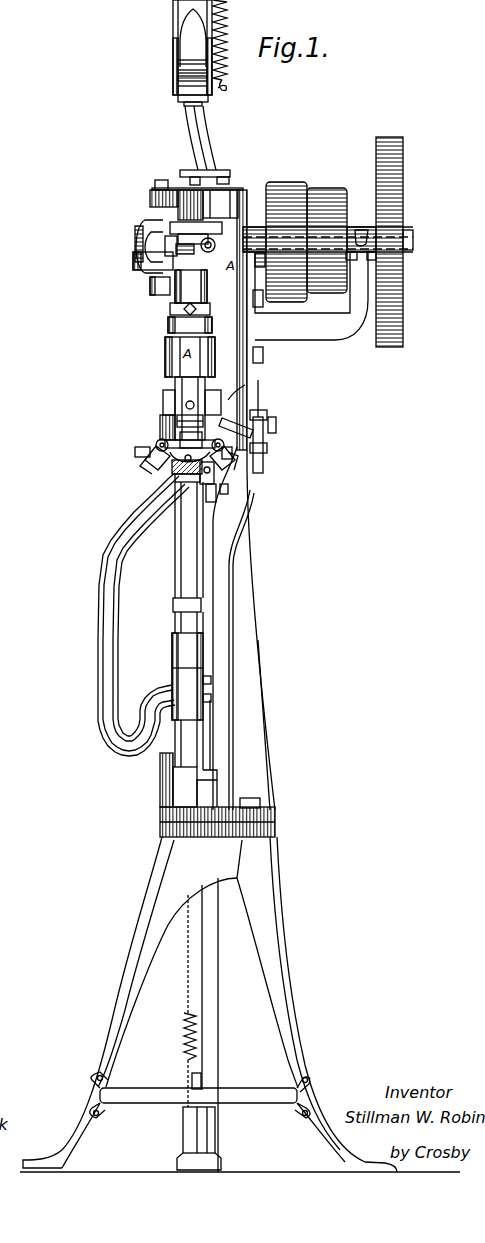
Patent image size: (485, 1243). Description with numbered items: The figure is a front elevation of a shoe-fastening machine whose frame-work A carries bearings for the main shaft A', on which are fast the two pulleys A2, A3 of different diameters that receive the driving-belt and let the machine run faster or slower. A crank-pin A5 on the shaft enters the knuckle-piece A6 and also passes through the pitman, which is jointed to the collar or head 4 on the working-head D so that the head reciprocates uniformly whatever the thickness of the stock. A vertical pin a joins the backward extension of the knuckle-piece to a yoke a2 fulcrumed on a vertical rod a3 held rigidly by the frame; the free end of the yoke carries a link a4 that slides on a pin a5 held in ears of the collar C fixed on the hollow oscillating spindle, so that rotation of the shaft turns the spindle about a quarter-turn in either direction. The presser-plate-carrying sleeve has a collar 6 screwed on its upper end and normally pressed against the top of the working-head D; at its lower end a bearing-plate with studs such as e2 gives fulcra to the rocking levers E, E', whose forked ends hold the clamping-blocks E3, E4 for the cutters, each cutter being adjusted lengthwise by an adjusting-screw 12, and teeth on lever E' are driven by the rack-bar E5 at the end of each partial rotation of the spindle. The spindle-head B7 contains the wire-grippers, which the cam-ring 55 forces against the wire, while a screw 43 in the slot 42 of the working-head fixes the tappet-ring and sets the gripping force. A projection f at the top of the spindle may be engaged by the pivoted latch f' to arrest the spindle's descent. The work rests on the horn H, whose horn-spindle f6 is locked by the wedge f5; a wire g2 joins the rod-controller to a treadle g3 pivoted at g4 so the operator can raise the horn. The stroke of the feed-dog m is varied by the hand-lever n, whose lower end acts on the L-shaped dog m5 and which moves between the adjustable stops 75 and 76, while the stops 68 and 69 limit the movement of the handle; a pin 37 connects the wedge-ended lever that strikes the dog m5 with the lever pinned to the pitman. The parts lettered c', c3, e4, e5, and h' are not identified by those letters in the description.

The cylinder c' is at (180, 53).
The spring c3 is at (226, 38).
The projection f is at (197, 145).
The pivoted latch f' is at (231, 170).
The frame-work A is at (240, 677).
The main shaft A' is at (328, 238).
The pulley A2 is at (327, 230).
The pulley A3 is at (286, 233).
The crank-pin A5 is at (160, 248).
The knuckle-piece A6 is at (146, 240).
The vertical pin a is at (165, 441).
The yoke a2 is at (133, 262).
The vertical rod a3 is at (158, 213).
The link a4 is at (200, 250).
The pin a5 is at (207, 284).
The collar C is at (150, 290).
The collar 6 is at (172, 309).
The collar or head 4 is at (168, 324).
The working-head D is at (165, 340).
The working lever E is at (137, 465).
The working lever E' is at (225, 475).
The cutter-holding clamping-block E3 is at (146, 462).
The cutter-holding clamping-block E4 is at (240, 462).
The rack-bar E5 is at (246, 392).
The pin or stud e2 is at (163, 444).
The guide block e4 is at (163, 417).
The link e5 is at (183, 470).
The spindle-head B7 is at (175, 468).
The adjusting-screw 12 is at (135, 452).
The pin 37 is at (173, 605).
The slot 42 is at (177, 421).
The screw 43 is at (178, 413).
The cam-ring 55 is at (192, 442).
The stop 68 is at (267, 425).
The stop 69 is at (267, 452).
The stop 75 is at (236, 420).
The stop 76 is at (272, 418).
The rod h' is at (270, 429).
The hand-lever n is at (231, 466).
The feed-dog m is at (186, 482).
The L-shaped dog m5 is at (205, 486).
The horn H is at (97, 613).
The wedge f5 is at (175, 775).
The horn-spindle f6 is at (175, 634).
The wire g2 is at (187, 983).
The treadle g3 is at (210, 1130).
The pivot g4 is at (192, 1078).